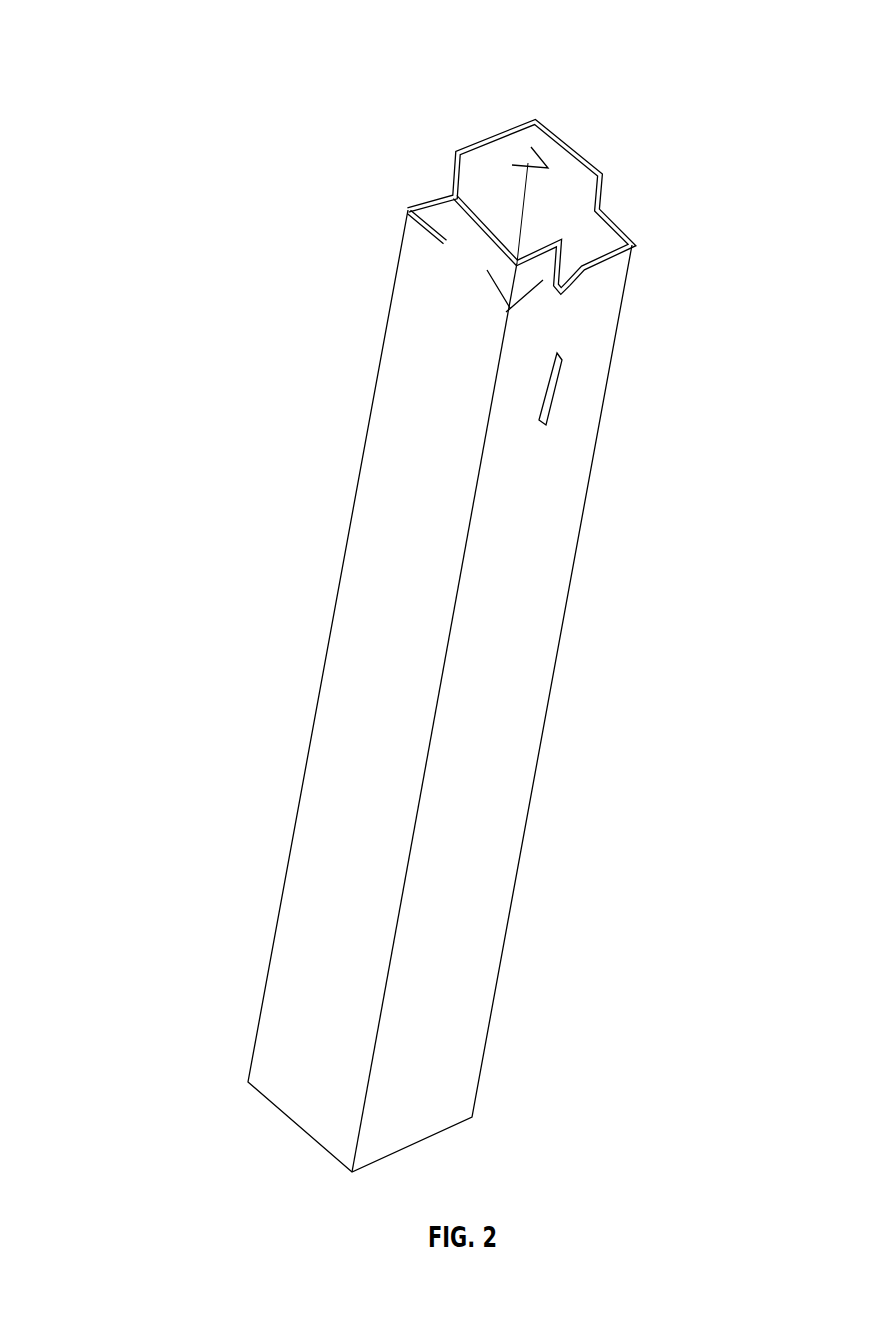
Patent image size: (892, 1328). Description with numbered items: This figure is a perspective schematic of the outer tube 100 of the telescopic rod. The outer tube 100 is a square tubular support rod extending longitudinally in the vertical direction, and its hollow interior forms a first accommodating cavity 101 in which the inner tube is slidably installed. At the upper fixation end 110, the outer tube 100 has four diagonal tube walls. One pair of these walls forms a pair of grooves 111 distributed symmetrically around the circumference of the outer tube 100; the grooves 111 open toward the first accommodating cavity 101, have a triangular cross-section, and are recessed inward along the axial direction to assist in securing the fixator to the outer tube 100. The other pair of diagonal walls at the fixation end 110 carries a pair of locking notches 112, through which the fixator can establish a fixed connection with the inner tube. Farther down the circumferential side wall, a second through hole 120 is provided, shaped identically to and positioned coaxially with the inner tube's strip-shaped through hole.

The outer tube 100 is at (240, 212).
The first accommodating cavity 101 is at (530, 237).
The fixation end 110 is at (610, 287).
The grooves 111 is at (527, 162).
The locking notches 112 is at (447, 187).
The second through hole 120 is at (552, 387).